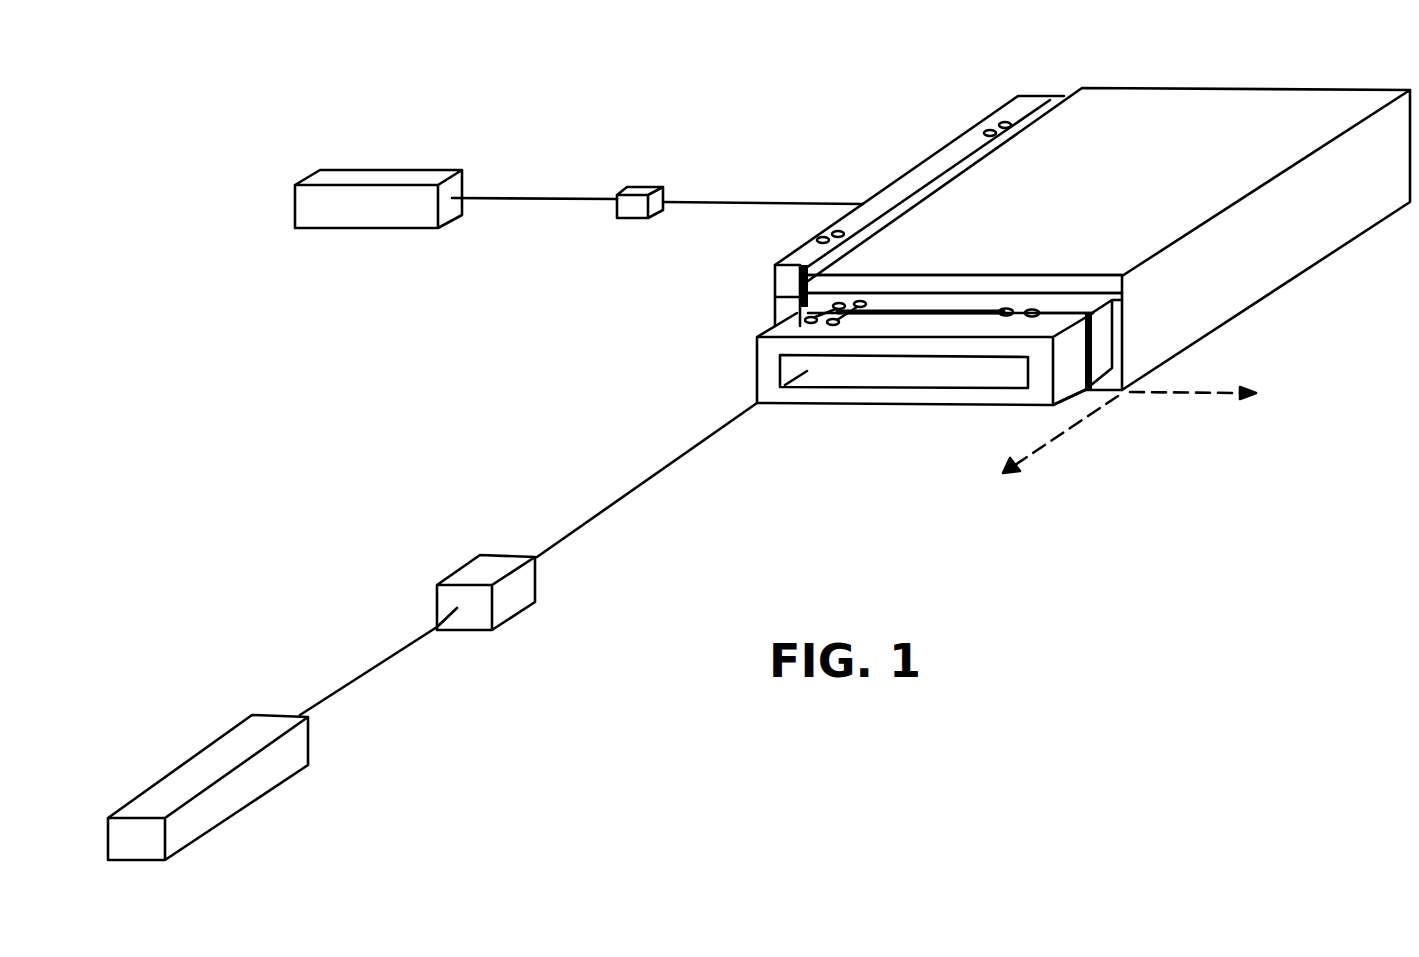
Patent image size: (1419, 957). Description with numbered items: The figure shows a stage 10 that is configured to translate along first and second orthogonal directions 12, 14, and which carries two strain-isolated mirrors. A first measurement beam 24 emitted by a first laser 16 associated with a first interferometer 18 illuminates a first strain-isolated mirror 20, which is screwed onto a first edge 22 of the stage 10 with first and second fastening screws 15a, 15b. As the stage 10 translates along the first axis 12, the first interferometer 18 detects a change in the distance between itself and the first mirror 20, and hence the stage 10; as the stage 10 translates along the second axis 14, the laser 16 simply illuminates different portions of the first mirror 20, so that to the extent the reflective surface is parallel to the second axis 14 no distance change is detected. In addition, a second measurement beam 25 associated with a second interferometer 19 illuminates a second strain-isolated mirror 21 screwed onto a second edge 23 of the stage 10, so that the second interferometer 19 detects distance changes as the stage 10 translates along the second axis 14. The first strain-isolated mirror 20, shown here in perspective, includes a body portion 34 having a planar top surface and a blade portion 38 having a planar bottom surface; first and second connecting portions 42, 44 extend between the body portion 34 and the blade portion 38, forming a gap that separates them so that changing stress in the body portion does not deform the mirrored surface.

The stage 10 is at (1198, 88).
The first direction 12 is at (1040, 450).
The second direction 14 is at (1203, 396).
The first fastening screw 15a is at (1122, 310).
The second fastening screw 15b is at (775, 297).
The first laser 16 is at (187, 762).
The first interferometer 18 is at (463, 568).
The second interferometer 19 is at (645, 183).
The first strain-isolated mirror 20 is at (840, 378).
The second strain-isolated mirror 21 is at (790, 256).
The first edge 22 is at (1073, 287).
The second edge 23 is at (1078, 92).
The first measurement beam 24 is at (655, 472).
The second measurement beam 25 is at (752, 200).
The body portion 34 is at (940, 300).
The blade portion 38 is at (1070, 388).
The first connecting portion 42 is at (845, 292).
The second connecting portion 44 is at (1024, 306).